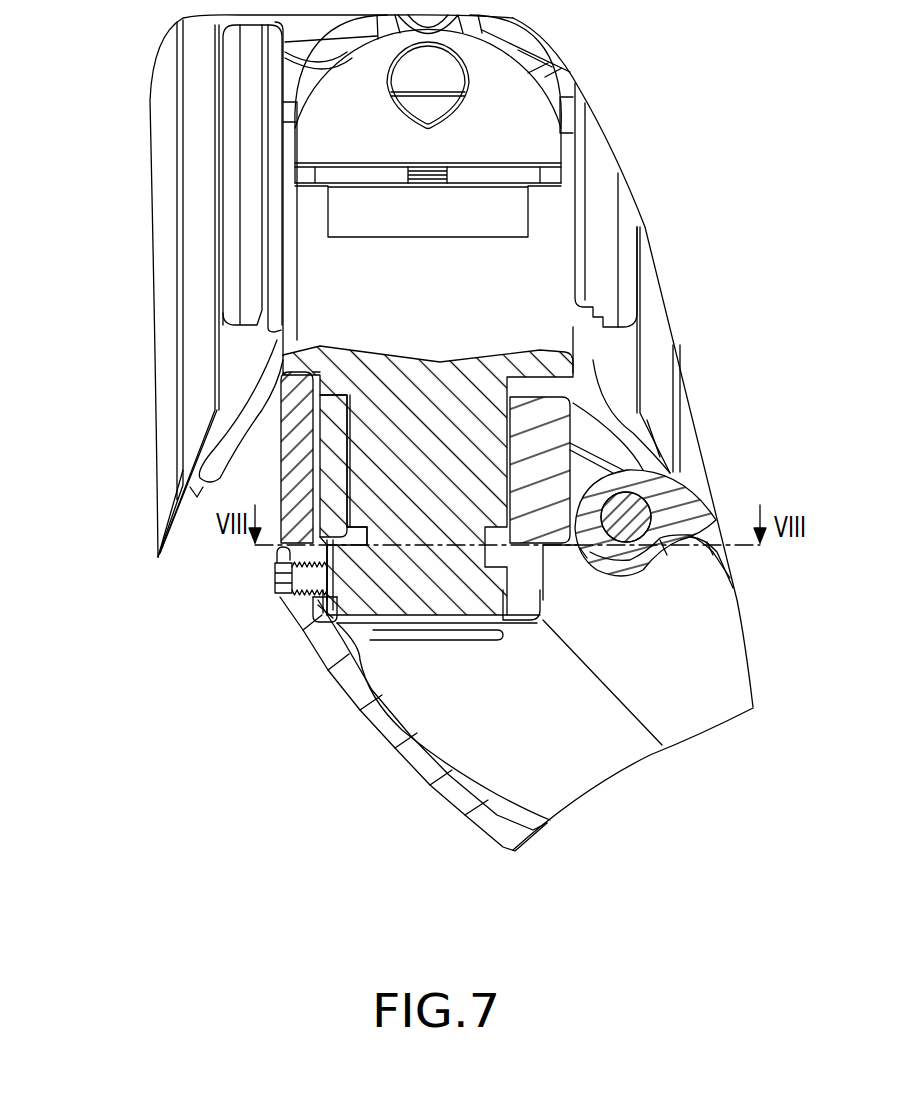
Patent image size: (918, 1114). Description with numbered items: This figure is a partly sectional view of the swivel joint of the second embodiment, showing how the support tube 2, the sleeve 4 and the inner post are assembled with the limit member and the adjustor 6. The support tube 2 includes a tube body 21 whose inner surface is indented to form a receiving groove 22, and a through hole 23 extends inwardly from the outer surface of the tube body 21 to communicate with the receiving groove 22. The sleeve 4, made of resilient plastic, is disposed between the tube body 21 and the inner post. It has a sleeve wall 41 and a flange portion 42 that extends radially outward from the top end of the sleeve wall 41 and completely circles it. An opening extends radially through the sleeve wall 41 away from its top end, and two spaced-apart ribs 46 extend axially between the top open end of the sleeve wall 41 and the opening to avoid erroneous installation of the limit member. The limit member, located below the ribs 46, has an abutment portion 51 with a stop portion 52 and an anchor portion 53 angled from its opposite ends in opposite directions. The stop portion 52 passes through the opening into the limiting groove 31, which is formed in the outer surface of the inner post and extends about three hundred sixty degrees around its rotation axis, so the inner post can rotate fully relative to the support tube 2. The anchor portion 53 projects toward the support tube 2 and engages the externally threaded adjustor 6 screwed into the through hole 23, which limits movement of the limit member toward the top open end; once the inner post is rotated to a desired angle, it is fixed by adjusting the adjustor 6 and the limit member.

The support tube 2 is at (313, 480).
The tube body 21 is at (297, 410).
The receiving groove 22 is at (327, 438).
The through hole 23 is at (277, 553).
The limiting groove 31 is at (330, 487).
The sleeve 4 is at (315, 467).
The sleeve wall 41 is at (312, 452).
The flange portion 42 is at (283, 371).
The ribs 46 is at (347, 527).
The abutment portion 51 is at (327, 605).
The stop portion 52 is at (195, 495).
The anchor portion 53 is at (325, 618).
The adjustor 6 is at (303, 585).